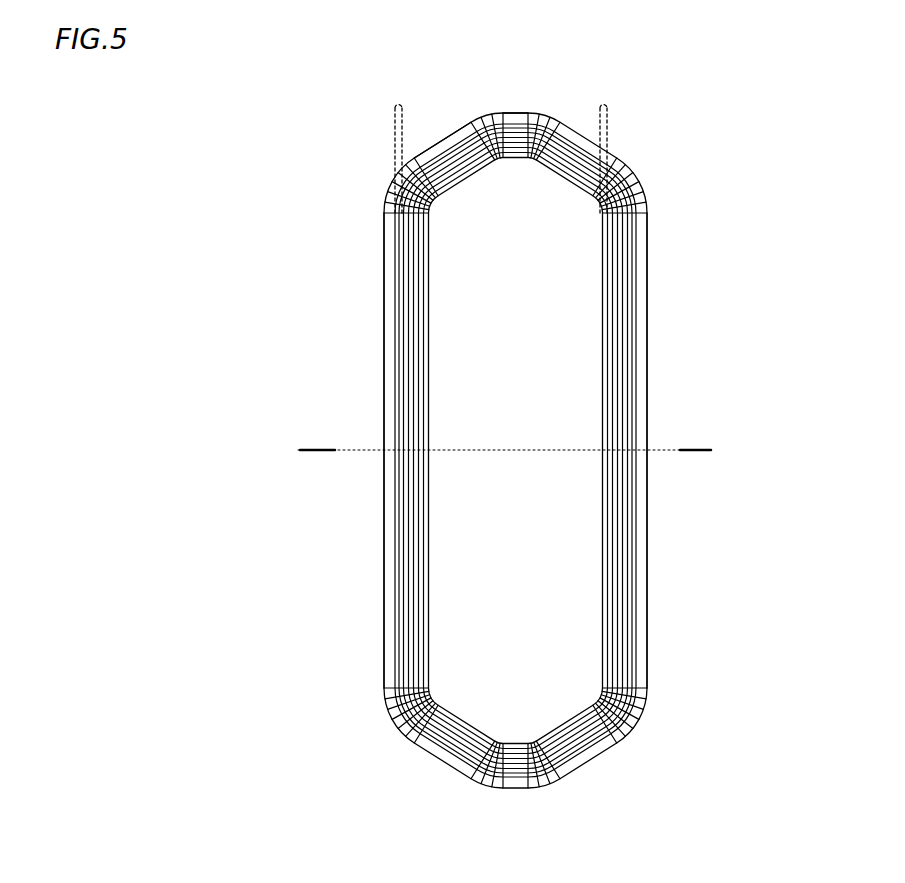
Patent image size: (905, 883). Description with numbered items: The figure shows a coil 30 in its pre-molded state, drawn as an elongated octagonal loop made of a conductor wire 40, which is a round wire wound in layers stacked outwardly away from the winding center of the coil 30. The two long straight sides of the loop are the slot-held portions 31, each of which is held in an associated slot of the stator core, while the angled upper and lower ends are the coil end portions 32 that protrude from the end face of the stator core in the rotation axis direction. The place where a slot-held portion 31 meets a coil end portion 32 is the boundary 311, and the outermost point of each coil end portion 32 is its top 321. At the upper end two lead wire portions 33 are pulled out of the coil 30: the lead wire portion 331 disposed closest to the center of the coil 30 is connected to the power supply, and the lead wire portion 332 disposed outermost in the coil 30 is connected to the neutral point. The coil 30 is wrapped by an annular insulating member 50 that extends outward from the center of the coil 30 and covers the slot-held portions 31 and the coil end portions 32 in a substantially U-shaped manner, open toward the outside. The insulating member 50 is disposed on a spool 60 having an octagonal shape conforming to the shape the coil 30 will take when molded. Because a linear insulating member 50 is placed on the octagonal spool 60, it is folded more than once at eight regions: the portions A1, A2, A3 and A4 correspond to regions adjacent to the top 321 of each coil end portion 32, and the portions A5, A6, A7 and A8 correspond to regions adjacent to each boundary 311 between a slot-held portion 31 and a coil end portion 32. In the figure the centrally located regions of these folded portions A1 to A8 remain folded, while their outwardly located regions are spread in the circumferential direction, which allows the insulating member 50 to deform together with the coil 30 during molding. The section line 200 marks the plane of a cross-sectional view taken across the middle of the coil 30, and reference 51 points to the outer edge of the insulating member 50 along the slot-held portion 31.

The coil 30 is at (540, 434).
The conductor wire 40 is at (540, 434).
The slot-held portion 31 is at (640, 385).
The boundary 311 is at (383, 215).
The coil end portion 32 is at (452, 138).
The top 321 is at (515, 112).
The lead wire portion 33 is at (518, 147).
The lead wire portion 331 is at (608, 126).
The lead wire portion 332 is at (395, 133).
The insulating member 50 is at (637, 522).
The outer periphery of conductor 51 is at (647, 558).
The spool 60 is at (429, 337).
The section line 200 is at (695, 448).
The portion of the insulating member A1 is at (553, 118).
The portion of the insulating member A2 is at (558, 784).
The portion of the insulating member A3 is at (483, 786).
The portion of the insulating member A4 is at (483, 118).
The portion of the insulating member A5 is at (644, 194).
The portion of the insulating member A6 is at (641, 709).
The portion of the insulating member A7 is at (402, 730).
The portion of the insulating member A8 is at (386, 193).